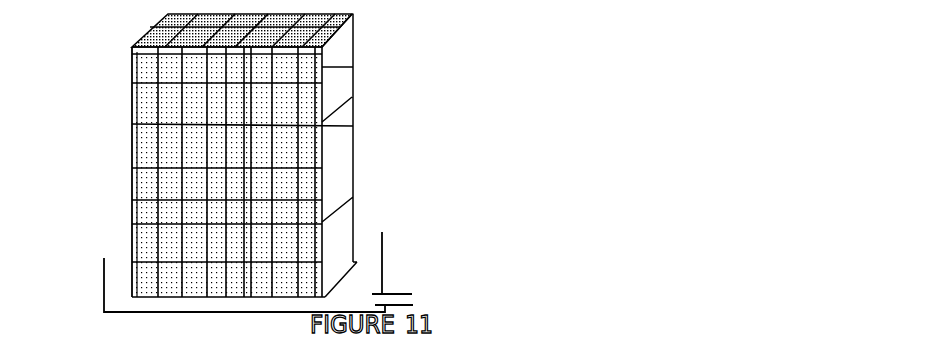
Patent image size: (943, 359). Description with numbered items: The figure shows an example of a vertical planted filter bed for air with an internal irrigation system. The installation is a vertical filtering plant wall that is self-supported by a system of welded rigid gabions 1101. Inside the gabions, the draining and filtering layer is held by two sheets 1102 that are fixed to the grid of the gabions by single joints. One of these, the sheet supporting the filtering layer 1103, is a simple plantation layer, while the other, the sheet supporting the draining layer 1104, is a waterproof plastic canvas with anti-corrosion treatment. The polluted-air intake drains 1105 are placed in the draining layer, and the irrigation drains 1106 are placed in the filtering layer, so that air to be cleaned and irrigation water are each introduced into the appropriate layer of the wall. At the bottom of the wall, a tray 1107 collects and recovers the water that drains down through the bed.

The welded rigid gabions 1101 is at (353, 67).
The sheets 1102 is at (353, 126).
The sheet supporting the filtering layer 1103 is at (350, 15).
The sheet supporting the draining layer 1104 is at (322, 42).
The polluted-air intake drains 1105 is at (142, 52).
The irrigation drains 1106 is at (178, 25).
The tray 1107 is at (118, 285).